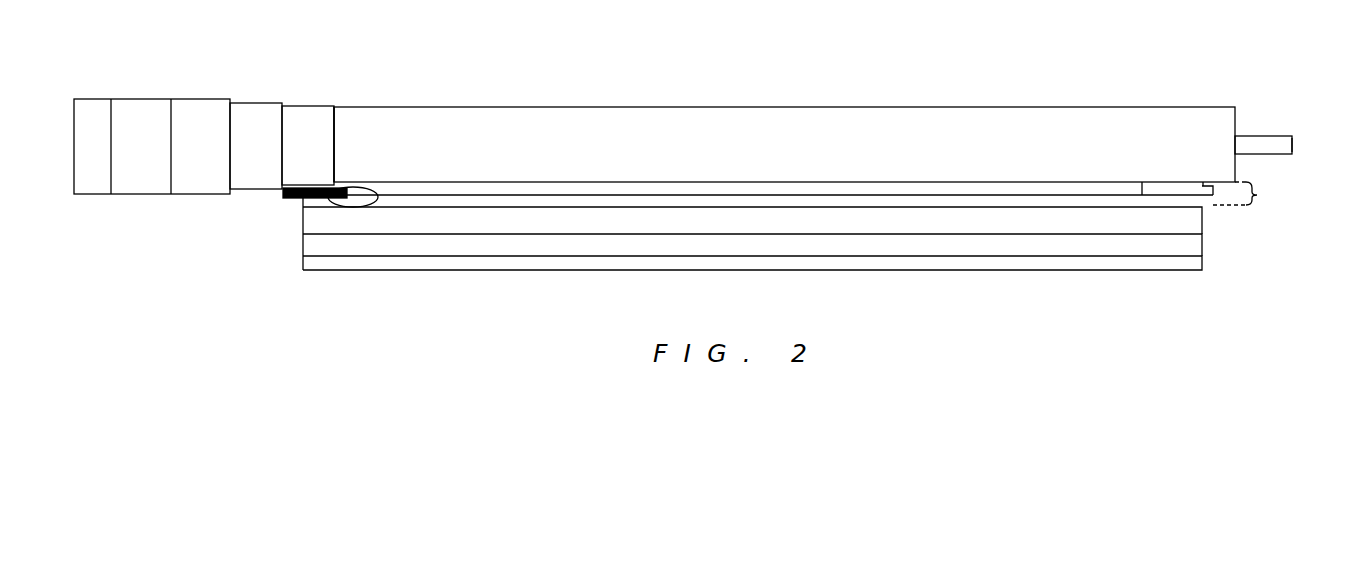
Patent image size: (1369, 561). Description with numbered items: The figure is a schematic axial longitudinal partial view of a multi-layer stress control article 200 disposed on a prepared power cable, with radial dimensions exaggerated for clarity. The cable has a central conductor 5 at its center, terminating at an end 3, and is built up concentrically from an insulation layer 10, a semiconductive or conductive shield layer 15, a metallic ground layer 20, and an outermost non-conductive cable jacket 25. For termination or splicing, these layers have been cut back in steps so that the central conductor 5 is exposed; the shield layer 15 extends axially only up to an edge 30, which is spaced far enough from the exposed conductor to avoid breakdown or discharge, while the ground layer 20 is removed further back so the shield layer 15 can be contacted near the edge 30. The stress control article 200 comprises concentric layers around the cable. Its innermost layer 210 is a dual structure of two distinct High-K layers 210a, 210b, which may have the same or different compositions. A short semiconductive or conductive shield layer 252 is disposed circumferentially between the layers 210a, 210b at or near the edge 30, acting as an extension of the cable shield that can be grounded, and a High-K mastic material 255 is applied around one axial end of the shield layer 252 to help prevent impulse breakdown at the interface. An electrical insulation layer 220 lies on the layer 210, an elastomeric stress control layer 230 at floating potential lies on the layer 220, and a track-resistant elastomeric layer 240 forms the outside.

The end of the cable 3 is at (1292, 139).
The central conductor 5 is at (1263, 136).
The insulation layer 10 is at (1062, 107).
The shield layer 15 is at (314, 106).
The ground layer 20 is at (256, 103).
The cable jacket 25 is at (199, 99).
The edge of the shield layer 30 is at (334, 106).
The multi-layer stress control article 200 is at (1135, 295).
The first layer 210 is at (1257, 195).
The High-K layer 210a is at (1203, 186).
The High-K layer 210b is at (1142, 198).
The electrical insulation layer 220 is at (1202, 223).
The elastomeric stress control layer 230 is at (1202, 243).
The track-resistant layer 240 is at (1202, 261).
The shield layer 252 is at (300, 199).
The High-K mastic material 255 is at (343, 213).